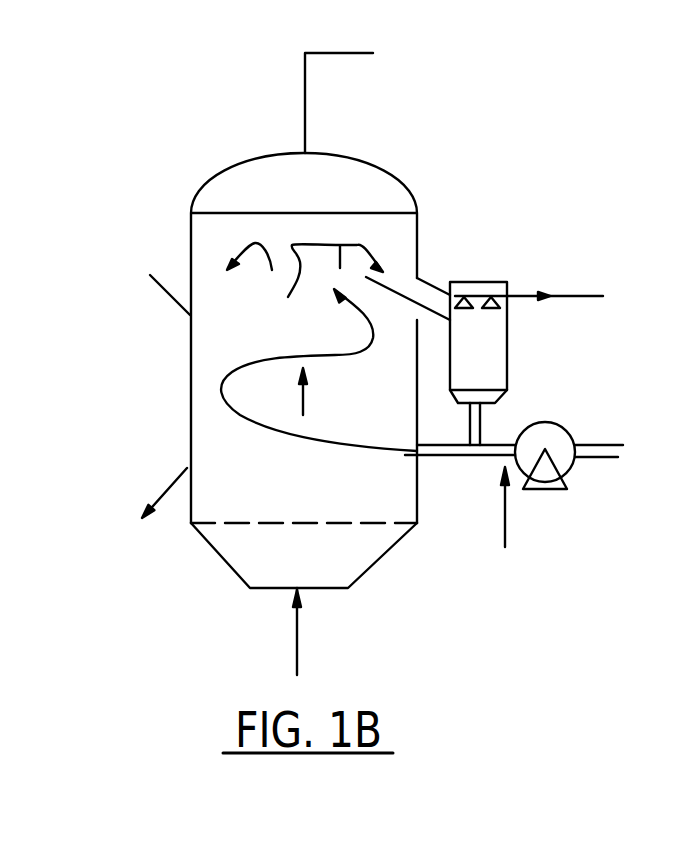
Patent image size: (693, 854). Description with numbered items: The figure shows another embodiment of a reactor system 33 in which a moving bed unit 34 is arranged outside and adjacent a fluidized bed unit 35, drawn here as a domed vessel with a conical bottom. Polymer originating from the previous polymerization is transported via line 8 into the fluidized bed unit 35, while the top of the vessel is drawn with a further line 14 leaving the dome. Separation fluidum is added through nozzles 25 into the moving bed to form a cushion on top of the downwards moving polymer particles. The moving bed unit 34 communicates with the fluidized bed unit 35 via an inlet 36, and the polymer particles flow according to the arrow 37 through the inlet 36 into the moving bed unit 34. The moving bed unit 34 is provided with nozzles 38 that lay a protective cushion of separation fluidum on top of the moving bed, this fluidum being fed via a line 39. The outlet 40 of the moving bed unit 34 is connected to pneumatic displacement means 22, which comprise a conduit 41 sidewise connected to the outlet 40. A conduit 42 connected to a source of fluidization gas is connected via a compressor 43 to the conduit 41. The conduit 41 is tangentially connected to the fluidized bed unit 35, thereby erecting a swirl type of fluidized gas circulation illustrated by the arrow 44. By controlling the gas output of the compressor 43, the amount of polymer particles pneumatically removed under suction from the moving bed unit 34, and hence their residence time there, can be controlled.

The line 8 is at (160, 288).
The top outlet line 14 is at (325, 52).
The pneumatic displacement means 22 is at (505, 525).
The nozzles 25 is at (162, 487).
The reactor system 33 is at (405, 138).
The moving bed unit 34 is at (507, 357).
The fluidized bed unit 35 is at (190, 403).
The inlet 36 is at (437, 280).
The arrow 37 is at (320, 285).
The nozzles 38 is at (507, 308).
The line 39 is at (578, 296).
The outlet 40 is at (482, 415).
The conduit 41 is at (477, 457).
The conduit 42 is at (617, 450).
The compressor 43 is at (562, 462).
The arrow 44 is at (315, 440).